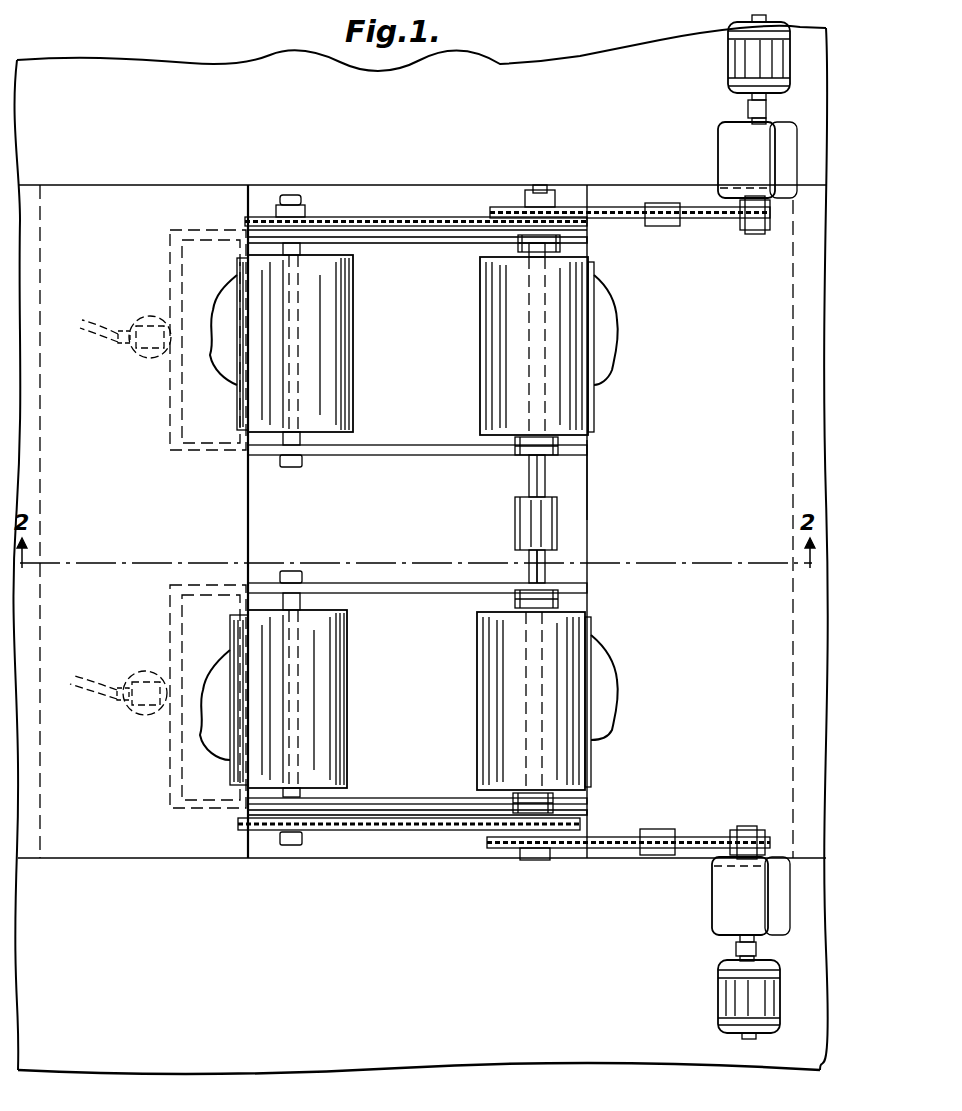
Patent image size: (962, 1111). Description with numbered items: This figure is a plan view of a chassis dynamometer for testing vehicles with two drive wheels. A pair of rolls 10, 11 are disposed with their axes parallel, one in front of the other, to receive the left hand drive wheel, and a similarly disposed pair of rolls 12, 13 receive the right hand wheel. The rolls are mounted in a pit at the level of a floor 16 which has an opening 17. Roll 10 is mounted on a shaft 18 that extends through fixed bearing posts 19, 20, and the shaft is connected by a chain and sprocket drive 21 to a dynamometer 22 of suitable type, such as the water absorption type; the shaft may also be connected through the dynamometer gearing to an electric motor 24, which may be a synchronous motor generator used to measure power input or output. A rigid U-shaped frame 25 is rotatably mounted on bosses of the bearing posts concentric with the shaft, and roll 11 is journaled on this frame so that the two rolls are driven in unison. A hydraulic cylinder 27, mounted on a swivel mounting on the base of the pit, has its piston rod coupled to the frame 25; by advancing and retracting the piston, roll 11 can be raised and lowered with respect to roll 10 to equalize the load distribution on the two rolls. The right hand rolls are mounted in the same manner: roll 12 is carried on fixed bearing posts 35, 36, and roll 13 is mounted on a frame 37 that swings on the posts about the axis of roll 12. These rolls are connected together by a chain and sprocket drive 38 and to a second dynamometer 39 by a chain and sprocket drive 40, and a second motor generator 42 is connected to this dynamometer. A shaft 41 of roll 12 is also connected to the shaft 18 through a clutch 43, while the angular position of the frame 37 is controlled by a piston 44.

The roll 10 is at (498, 302).
The roll 11 is at (340, 330).
The roll 12 is at (487, 716).
The roll 13 is at (333, 682).
The floor 16 is at (173, 190).
The opening 17 is at (567, 485).
The shaft 18 is at (528, 439).
The bearing post 19 is at (560, 445).
The bearing post 20 is at (560, 243).
The chain and sprocket drive 21 is at (602, 210).
The dynamometer 22 is at (730, 138).
The electric motor 24 is at (730, 62).
The U-shaped frame 25 is at (370, 455).
The hydraulic cylinder 27 is at (147, 356).
The bearing post 35 is at (555, 798).
The bearing post 36 is at (560, 603).
The frame 37 is at (434, 593).
The chain and sprocket drive 38 is at (407, 828).
The second dynamometer 39 is at (722, 912).
The chain and sprocket drive 40 is at (622, 846).
The shaft 41 is at (543, 562).
The second motor generator 42 is at (733, 996).
The clutch 43 is at (532, 523).
The piston 44 is at (145, 712).